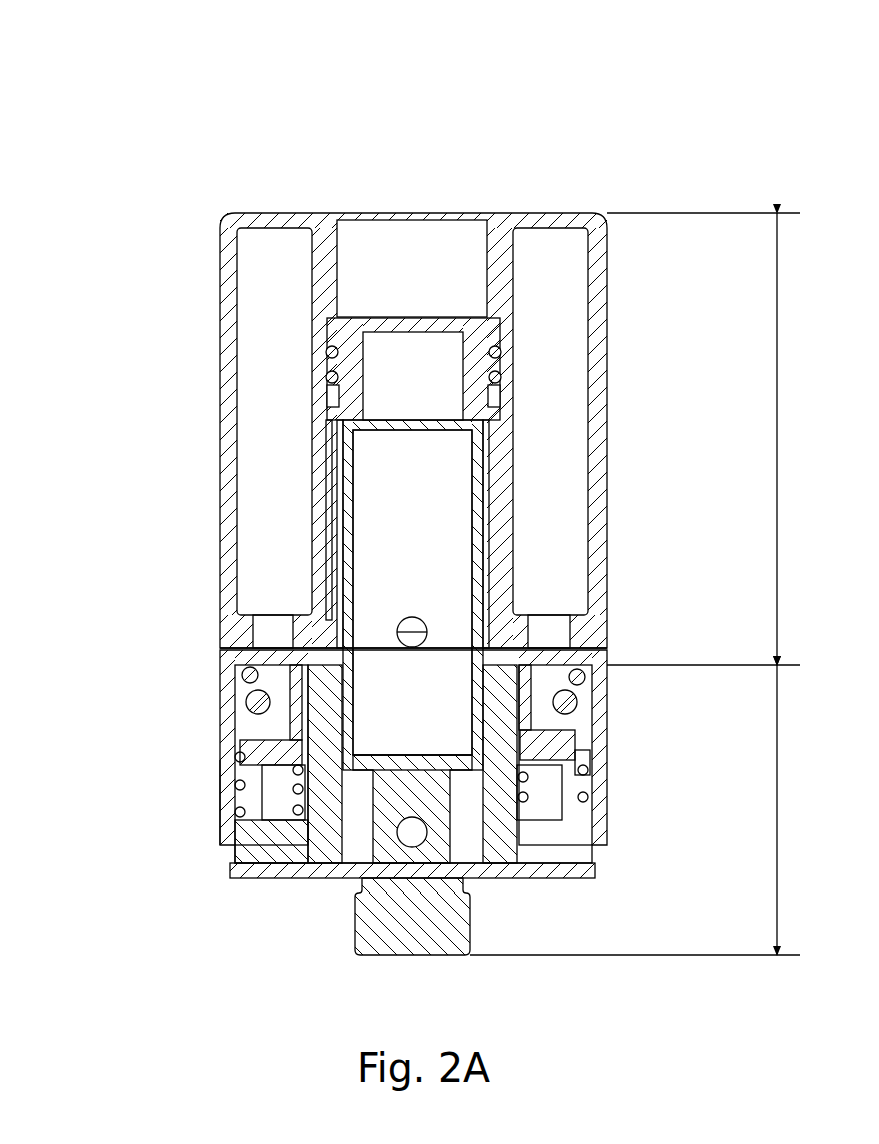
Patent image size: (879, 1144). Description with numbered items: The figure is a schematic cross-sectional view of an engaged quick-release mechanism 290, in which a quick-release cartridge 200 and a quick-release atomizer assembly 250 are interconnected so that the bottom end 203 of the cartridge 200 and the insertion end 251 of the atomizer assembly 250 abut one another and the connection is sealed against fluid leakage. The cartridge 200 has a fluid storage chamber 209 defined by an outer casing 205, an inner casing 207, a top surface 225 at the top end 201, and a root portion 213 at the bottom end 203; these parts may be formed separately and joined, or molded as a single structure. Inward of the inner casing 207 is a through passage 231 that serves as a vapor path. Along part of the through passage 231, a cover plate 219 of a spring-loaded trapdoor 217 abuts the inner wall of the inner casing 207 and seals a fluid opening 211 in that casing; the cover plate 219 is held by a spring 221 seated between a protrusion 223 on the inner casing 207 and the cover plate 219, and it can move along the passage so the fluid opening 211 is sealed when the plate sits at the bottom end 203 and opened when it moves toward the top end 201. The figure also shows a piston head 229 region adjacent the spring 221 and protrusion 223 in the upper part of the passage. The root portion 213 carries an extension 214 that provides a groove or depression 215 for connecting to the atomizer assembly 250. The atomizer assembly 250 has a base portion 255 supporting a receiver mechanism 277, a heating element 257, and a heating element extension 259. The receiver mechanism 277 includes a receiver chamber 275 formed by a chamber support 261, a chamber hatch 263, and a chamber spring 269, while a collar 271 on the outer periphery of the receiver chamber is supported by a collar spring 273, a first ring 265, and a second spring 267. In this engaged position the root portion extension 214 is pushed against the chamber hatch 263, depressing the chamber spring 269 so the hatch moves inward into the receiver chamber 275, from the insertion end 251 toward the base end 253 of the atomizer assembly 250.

The engaged quick-release mechanism 290 is at (190, 98).
The top surface 225 is at (510, 212).
The outer casing 205 is at (600, 240).
The piston head 229 is at (340, 322).
The spring 221 is at (326, 352).
The protrusion 223 is at (328, 394).
The fluid storage chamber 209 is at (555, 358).
The spring-loaded trapdoor 217 is at (330, 470).
The inner casing 207 is at (508, 492).
The cover plate 219 is at (340, 548).
The heating element extension 259 is at (475, 538).
The through passage 231 is at (433, 593).
The fluid opening 211 is at (495, 625).
The root portion 213 is at (600, 652).
The top end 201 is at (703, 439).
The quick-release cartridge 200 is at (797, 438).
The bottom end 203 is at (776, 630).
The insertion end 251 is at (703, 810).
The quick-release atomizer assembly 250 is at (799, 820).
The base end 253 is at (635, 932).
The second spring 267 is at (242, 674).
The first ring 265 is at (246, 702).
The chamber hatch 263 is at (262, 732).
The receiver mechanism 277 is at (120, 822).
The chamber spring 269 is at (292, 800).
The chamber support 261 is at (272, 845).
The base portion 255 is at (385, 930).
The groove or depression 215 is at (568, 712).
The extension 214 is at (560, 720).
The collar 271 is at (592, 760).
The collar spring 273 is at (590, 796).
The receiver chamber 275 is at (570, 862).
The heating element 257 is at (430, 805).